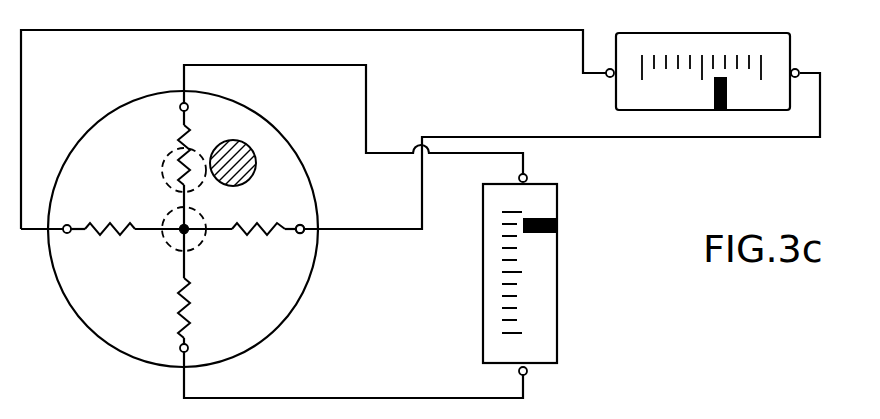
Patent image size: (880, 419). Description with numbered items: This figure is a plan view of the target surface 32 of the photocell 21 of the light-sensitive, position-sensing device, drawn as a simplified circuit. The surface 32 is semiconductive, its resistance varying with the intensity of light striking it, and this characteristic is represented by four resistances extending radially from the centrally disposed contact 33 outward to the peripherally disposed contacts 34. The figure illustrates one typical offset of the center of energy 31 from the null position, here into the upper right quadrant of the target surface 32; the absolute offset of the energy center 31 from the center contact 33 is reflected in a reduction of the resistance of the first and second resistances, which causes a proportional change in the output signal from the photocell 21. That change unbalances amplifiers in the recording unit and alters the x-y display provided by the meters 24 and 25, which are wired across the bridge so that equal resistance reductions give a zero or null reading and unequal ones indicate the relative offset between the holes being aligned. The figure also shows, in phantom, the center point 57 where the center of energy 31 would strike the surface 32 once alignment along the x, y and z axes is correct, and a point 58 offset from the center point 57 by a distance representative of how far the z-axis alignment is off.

The photocell 21 is at (287, 129).
The display meter 24 is at (765, 33).
The display meter 25 is at (557, 198).
The center of energy 31 is at (256, 163).
The target surface 32 is at (139, 323).
The centrally disposed contact 33 is at (180, 241).
The peripherally disposed contact 34 is at (301, 234).
The center point 57 is at (201, 247).
The offset point 58 is at (160, 176).